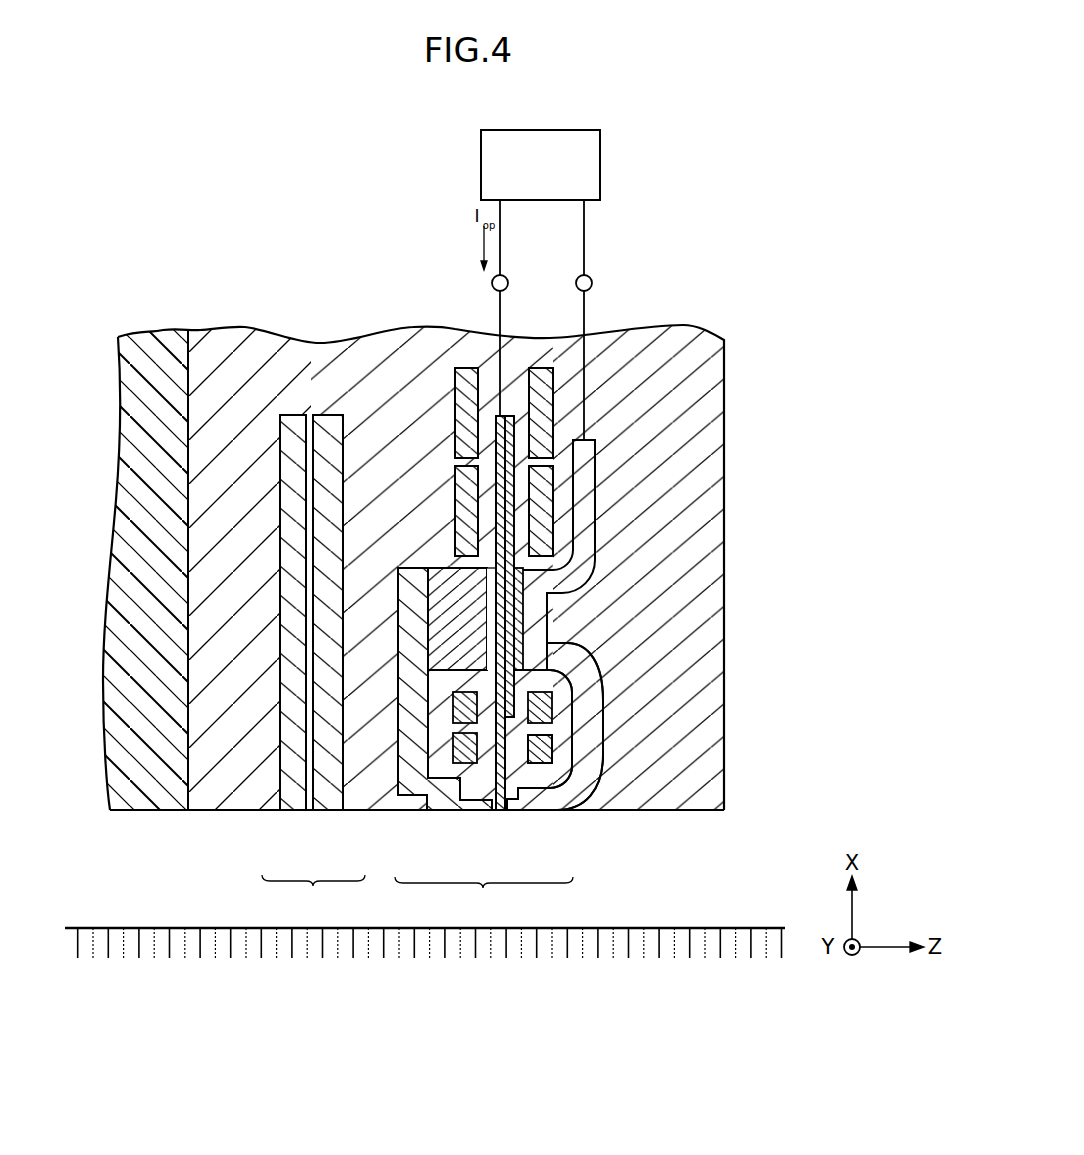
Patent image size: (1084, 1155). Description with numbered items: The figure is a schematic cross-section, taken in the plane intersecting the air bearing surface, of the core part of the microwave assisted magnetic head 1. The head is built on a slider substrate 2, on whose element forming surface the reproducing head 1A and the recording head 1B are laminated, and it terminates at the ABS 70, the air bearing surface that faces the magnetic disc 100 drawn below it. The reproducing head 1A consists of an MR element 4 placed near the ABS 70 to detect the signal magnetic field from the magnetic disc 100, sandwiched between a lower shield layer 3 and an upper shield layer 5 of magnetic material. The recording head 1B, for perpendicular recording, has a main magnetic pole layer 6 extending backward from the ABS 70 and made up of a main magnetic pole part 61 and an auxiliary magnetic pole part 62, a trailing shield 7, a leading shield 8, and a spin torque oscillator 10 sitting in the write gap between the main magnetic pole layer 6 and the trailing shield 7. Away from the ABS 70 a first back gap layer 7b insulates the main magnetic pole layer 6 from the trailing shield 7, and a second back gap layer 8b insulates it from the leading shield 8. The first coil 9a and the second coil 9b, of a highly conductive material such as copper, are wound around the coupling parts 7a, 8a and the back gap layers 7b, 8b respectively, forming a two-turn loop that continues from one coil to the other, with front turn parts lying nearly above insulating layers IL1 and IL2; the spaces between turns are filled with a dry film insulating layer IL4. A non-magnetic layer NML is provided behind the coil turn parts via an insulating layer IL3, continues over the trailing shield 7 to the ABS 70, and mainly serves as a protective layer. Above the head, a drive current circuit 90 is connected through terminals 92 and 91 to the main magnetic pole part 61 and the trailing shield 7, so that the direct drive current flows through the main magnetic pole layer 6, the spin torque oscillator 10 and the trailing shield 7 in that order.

The microwave assisted magnetic head 1 is at (746, 402).
The reproducing head 1A is at (313, 893).
The recording head 1B is at (484, 894).
The slider substrate 2 is at (155, 800).
The lower shield layer 3 is at (290, 800).
The MR element 4 is at (310, 800).
The upper shield layer 5 is at (327, 800).
The main magnetic pole layer 6 is at (500, 800).
The main magnetic pole part 61 is at (500, 613).
The trailing shield 7 is at (553, 804).
The coupling part 7a is at (538, 635).
The first back gap layer 7b is at (522, 660).
The leading shield 8 is at (443, 806).
The coupling part 8a is at (467, 612).
The second back gap layer 8b is at (525, 572).
The first coil 9a is at (537, 767).
The second coil 9b is at (462, 766).
The spin torque oscillator 10 is at (507, 800).
The auxiliary magnetic pole part 62 is at (510, 500).
The ABS 70 is at (647, 811).
The drive current circuit 90 is at (601, 172).
The terminal 91 is at (592, 283).
The terminal 92 is at (492, 283).
The magnetic disc 100 is at (698, 930).
The insulating layer IL1 is at (515, 742).
The insulating layer IL2 is at (440, 712).
The insulating layer IL3 is at (560, 386).
The insulating layer IL4 is at (540, 728).
The non-magnetic layer NML is at (670, 460).